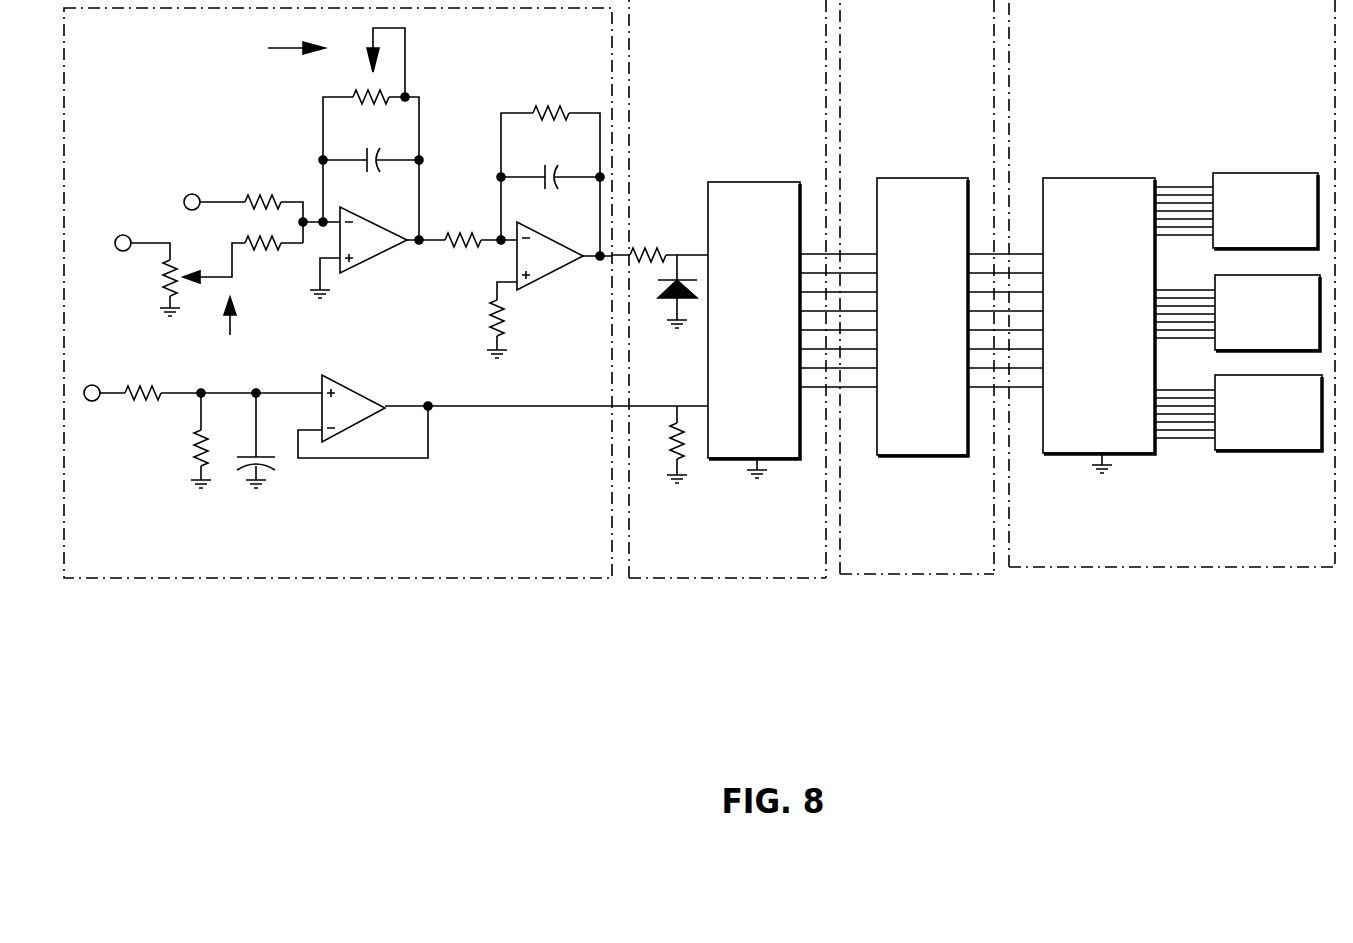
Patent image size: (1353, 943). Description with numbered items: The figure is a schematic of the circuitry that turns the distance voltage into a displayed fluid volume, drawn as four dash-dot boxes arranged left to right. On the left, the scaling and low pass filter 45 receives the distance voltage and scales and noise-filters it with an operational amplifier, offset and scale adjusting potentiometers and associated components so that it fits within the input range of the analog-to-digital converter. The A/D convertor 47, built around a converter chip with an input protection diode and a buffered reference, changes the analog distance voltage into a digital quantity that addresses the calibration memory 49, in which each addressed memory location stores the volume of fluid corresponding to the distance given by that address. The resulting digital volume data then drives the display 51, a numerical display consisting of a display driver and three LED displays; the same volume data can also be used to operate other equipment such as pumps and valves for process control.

The scaling and low pass filter 45 is at (372, 578).
The A/D convertor 47 is at (690, 578).
The calibration memory 49 is at (877, 574).
The display 51 is at (1087, 567).